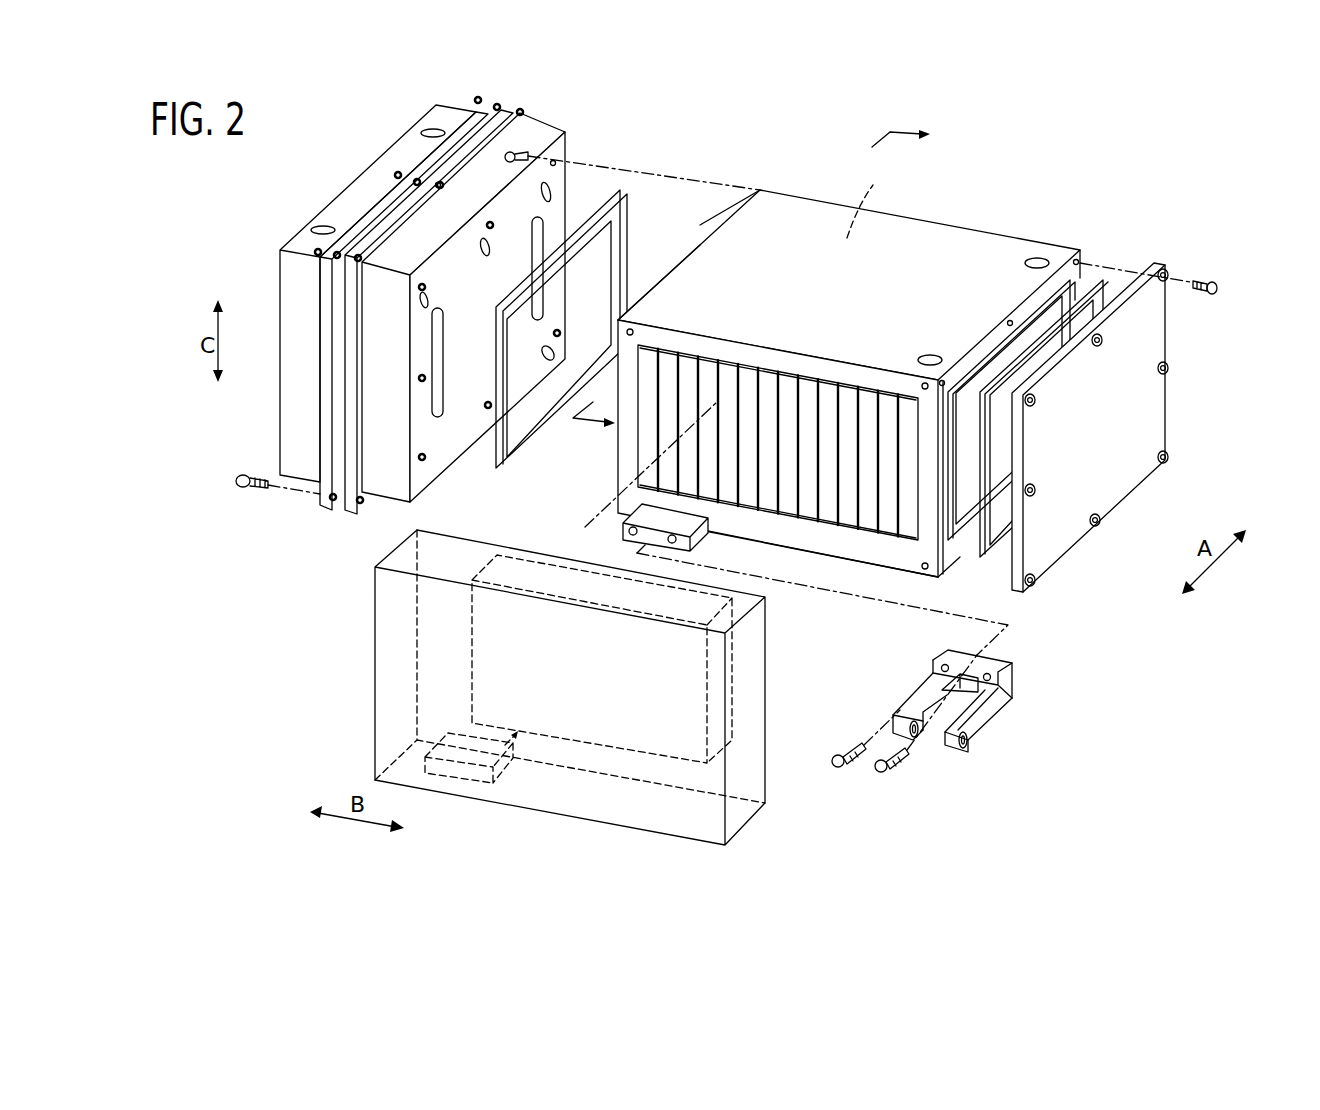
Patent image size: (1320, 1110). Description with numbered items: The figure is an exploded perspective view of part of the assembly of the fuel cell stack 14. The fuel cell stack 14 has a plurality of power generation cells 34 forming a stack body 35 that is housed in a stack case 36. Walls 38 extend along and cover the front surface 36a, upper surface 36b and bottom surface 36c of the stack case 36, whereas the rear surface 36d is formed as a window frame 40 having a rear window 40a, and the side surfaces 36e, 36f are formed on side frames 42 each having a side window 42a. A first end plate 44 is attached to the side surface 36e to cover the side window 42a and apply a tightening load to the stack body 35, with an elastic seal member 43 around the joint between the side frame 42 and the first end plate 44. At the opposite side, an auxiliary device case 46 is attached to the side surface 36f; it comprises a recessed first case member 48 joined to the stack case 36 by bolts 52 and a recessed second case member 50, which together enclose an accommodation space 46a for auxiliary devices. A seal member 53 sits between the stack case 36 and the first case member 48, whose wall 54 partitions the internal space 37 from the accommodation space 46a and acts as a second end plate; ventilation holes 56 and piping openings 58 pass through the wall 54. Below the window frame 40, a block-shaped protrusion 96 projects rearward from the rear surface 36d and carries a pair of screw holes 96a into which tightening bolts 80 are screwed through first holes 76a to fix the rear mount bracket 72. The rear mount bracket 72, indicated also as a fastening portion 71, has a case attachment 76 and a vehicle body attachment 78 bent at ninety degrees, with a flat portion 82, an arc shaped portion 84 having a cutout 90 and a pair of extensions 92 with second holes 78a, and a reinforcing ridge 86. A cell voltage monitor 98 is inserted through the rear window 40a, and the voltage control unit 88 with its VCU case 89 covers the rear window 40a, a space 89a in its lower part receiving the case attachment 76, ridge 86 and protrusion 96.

The fuel cell stack 14 is at (849, 269).
The power generation cells 34 is at (808, 368).
The stack body 35 is at (778, 511).
The stack case 36 is at (812, 366).
The front surface 36a is at (902, 215).
The upper surface 36b is at (800, 217).
The bottom surface 36c is at (820, 560).
The rear surface 36d is at (627, 460).
The side surface 36e is at (960, 545).
The side surface 36f is at (672, 268).
The internal space 37 is at (863, 203).
The walls 38 is at (988, 258).
The window frame 40 is at (672, 343).
The rear window 40a is at (720, 360).
The side frames 42 is at (1050, 295).
The side window 42a is at (1020, 328).
The seal member 43 is at (1093, 270).
The first end plate 44 is at (1150, 414).
The auxiliary device case 46 is at (417, 298).
The accommodation space 46a is at (348, 207).
The first case member 48 is at (483, 170).
The second case member 50 is at (442, 117).
The bolts 52 is at (517, 150).
The seal member 53 is at (618, 200).
The wall 54 is at (505, 317).
The ventilation holes 56 is at (553, 355).
The piping openings 58 is at (540, 232).
The fastening portion 71 is at (972, 674).
The rear mount bracket 72 is at (947, 719).
The case attachment 76 is at (1004, 667).
The first holes 76a is at (992, 678).
The vehicle body attachment 78 is at (1005, 744).
The second holes 78a is at (975, 737).
The tightening bolts 80 is at (878, 772).
The flat portion 82 is at (896, 732).
The arc shaped portion 84 is at (993, 766).
The ridge 86 is at (965, 675).
The voltage control unit 88 is at (556, 687).
The VCU case 89 is at (388, 607).
The space 89a is at (423, 745).
The cutout 90 is at (896, 749).
The extensions 92 is at (947, 745).
The protrusion 96 is at (778, 528).
The screw holes 96a is at (695, 540).
The cell voltage monitor 98 is at (762, 690).